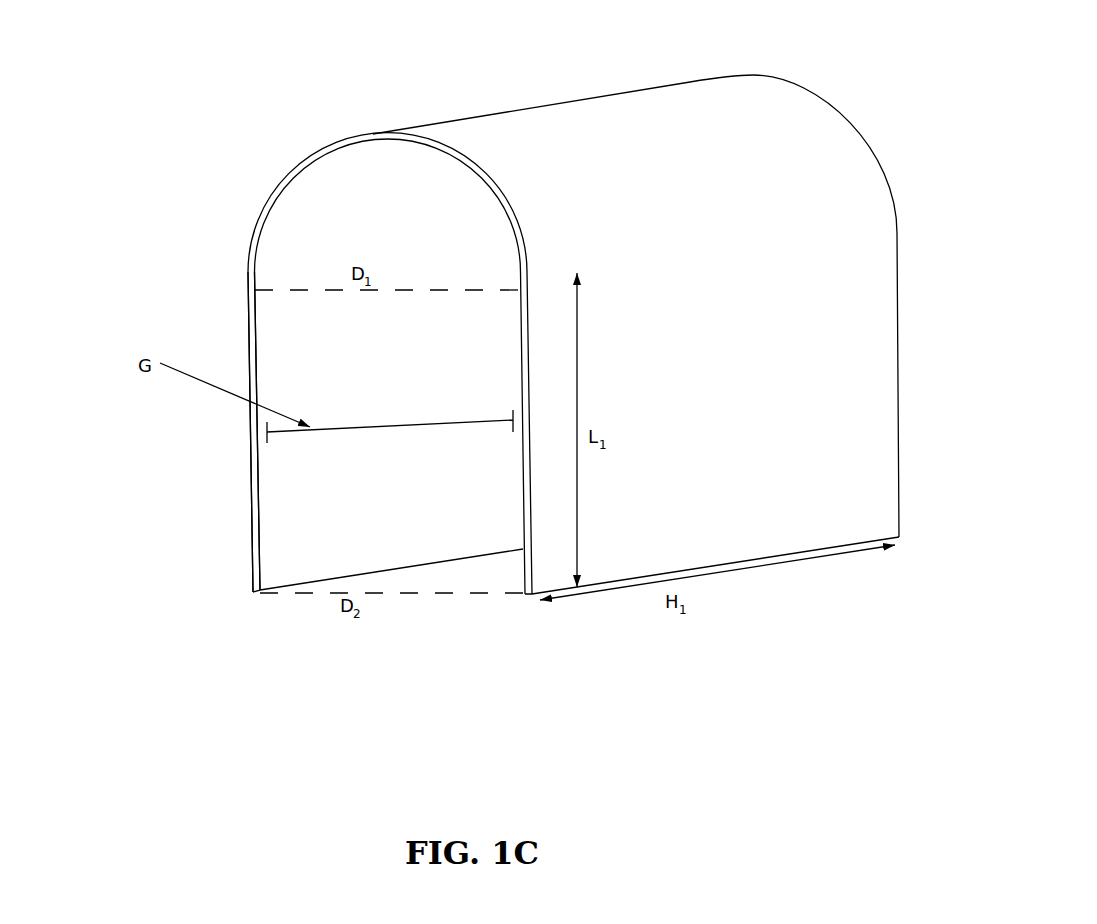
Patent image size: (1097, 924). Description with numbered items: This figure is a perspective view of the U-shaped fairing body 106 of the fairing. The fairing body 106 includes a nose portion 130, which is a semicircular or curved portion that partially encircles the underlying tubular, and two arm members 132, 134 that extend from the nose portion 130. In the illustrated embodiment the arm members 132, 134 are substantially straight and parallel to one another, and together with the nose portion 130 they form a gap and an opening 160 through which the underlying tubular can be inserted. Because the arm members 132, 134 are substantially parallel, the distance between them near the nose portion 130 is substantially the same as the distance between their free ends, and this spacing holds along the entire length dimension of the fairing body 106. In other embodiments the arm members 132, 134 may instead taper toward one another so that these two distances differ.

The fairing body 106 is at (293, 167).
The nose portion 130 is at (624, 96).
The arm member 132 is at (790, 527).
The arm member 134 is at (249, 450).
The opening 160 is at (290, 598).